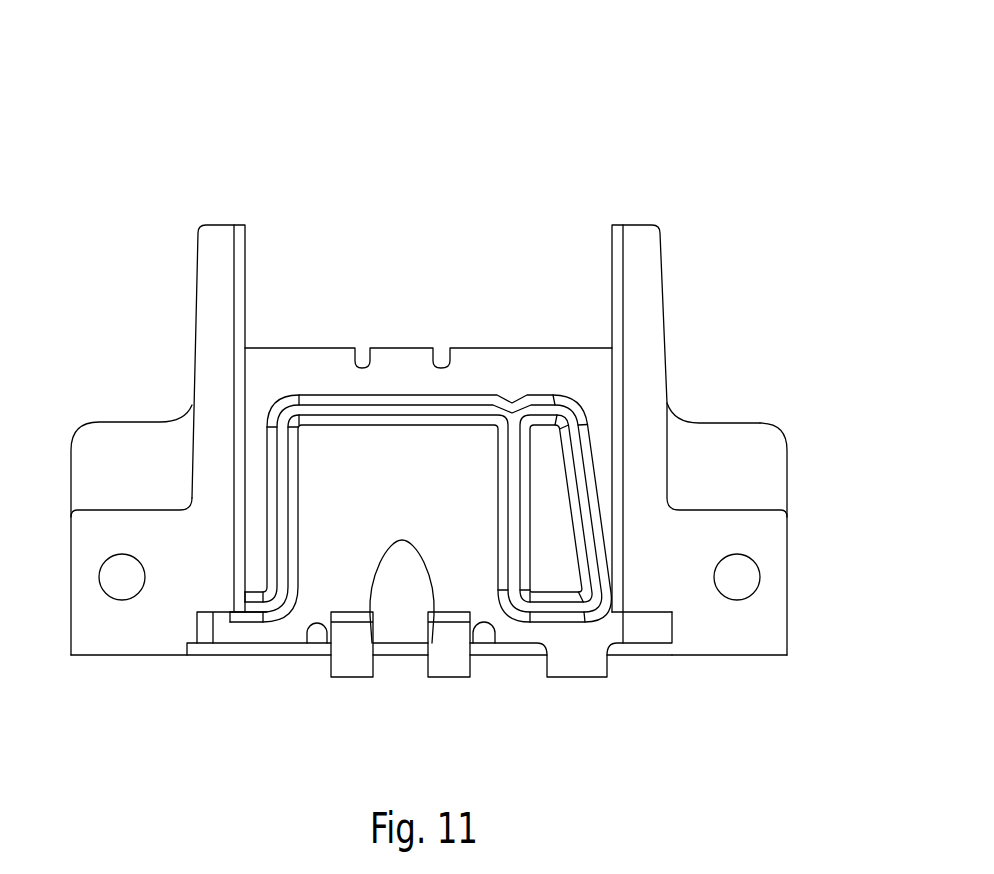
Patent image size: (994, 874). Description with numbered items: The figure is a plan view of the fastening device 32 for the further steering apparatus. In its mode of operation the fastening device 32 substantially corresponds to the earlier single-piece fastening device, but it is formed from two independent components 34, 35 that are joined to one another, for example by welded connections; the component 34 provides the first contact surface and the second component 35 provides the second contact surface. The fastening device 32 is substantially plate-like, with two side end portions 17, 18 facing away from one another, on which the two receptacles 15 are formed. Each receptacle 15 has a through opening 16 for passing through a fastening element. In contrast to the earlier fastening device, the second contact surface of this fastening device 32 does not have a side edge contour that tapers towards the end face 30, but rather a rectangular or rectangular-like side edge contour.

The receptacle 15 is at (62, 625).
The through opening 16 is at (122, 577).
The side end portion 17 is at (168, 668).
The side end portion 18 is at (682, 678).
The end face 30 is at (758, 492).
The fastening device 32 is at (548, 125).
The component 34 is at (716, 452).
The component 35 is at (780, 560).